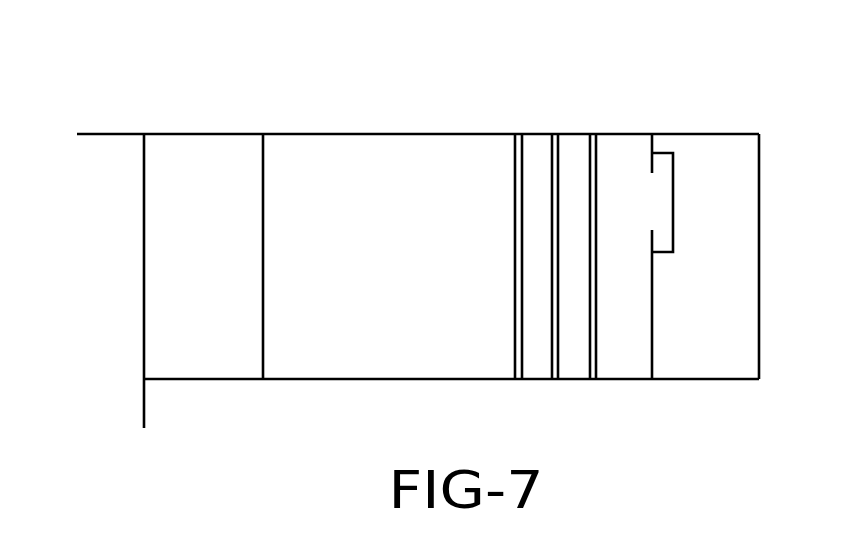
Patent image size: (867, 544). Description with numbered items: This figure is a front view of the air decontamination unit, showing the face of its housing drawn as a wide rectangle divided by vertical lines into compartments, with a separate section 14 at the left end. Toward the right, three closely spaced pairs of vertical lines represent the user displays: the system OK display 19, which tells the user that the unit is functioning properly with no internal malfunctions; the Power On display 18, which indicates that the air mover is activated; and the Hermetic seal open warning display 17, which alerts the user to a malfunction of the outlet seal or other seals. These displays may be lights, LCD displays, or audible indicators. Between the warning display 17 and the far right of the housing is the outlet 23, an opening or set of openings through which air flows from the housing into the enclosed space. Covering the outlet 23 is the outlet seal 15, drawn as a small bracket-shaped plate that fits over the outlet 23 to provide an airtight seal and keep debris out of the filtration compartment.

The substrate 14 is at (205, 223).
The outlet seal 15 is at (677, 177).
The Hermetic seal open warning display 17 is at (593, 168).
The Power On display 18 is at (555, 187).
The system OK display 19 is at (517, 193).
The outlet 23 is at (652, 198).